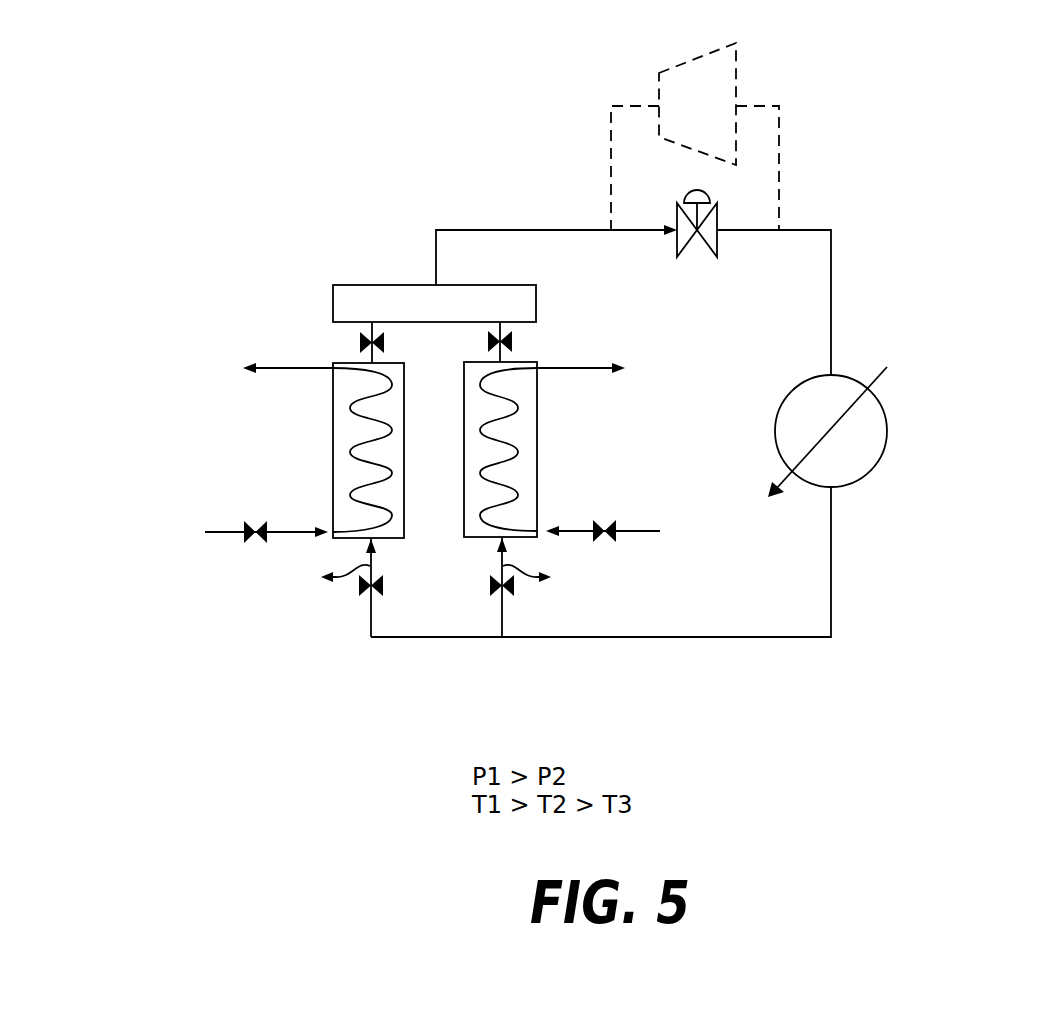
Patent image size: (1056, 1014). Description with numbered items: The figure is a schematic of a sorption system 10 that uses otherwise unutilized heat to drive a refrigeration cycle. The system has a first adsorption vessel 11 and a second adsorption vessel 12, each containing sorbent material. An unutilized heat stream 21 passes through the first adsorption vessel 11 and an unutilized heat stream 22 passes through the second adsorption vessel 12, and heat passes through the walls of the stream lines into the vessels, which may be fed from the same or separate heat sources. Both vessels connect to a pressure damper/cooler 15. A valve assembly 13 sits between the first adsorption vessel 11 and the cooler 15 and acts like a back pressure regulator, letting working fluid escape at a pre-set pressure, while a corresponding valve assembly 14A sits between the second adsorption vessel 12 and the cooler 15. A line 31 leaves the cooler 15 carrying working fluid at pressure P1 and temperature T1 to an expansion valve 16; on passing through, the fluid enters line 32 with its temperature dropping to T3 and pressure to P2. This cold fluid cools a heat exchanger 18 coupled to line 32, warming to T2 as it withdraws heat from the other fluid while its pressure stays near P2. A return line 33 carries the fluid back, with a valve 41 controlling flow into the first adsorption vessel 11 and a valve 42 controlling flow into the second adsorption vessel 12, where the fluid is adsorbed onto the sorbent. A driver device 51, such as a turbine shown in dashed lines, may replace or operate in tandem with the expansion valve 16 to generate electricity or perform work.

The sorption system 10 is at (1029, 161).
The first adsorption vessel 11 is at (345, 452).
The second adsorption vessel 12 is at (532, 428).
The valve assembly 13 is at (362, 326).
The second heat exchanger inlet valve 14A is at (508, 331).
The pressure damper/cooler 15 is at (388, 296).
The expansion valve 16 is at (718, 222).
The heat exchanger 18 is at (880, 393).
The unutilized heat stream 21 is at (231, 534).
The unutilized heat stream 22 is at (617, 540).
The line 31 is at (520, 230).
The line 32 is at (831, 243).
The return line 33 is at (622, 637).
The valve 41 is at (358, 594).
The valve 42 is at (512, 590).
The driver device 51 is at (737, 88).